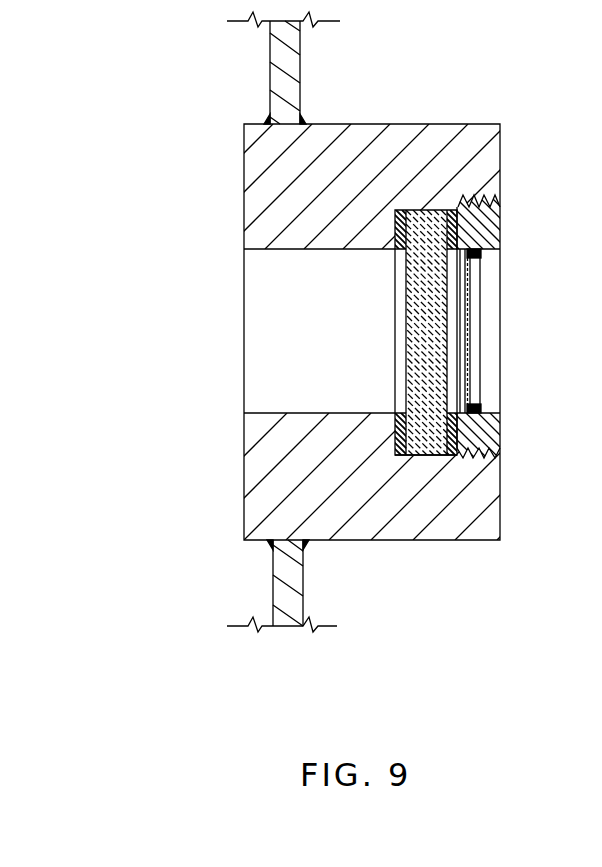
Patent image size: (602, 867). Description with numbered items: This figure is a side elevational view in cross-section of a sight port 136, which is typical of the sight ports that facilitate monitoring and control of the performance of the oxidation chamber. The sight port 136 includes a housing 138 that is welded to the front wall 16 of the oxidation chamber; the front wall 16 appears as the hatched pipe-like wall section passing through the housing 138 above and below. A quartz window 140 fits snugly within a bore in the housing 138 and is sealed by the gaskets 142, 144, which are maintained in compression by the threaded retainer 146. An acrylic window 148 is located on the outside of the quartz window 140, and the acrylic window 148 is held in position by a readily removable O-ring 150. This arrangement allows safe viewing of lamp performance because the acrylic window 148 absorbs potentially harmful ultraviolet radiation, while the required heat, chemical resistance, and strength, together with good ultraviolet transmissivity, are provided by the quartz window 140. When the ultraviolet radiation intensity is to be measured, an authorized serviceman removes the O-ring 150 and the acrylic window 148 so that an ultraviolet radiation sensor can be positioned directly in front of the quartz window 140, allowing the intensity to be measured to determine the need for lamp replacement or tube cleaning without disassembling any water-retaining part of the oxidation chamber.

The front wall 16 is at (273, 583).
The sight port 136 is at (523, 143).
The housing 138 is at (417, 123).
The quartz window 140 is at (425, 432).
The gasket 142 is at (400, 252).
The gasket 144 is at (458, 224).
The threaded retainer 146 is at (497, 435).
The acrylic window 148 is at (472, 358).
The O-ring 150 is at (479, 409).